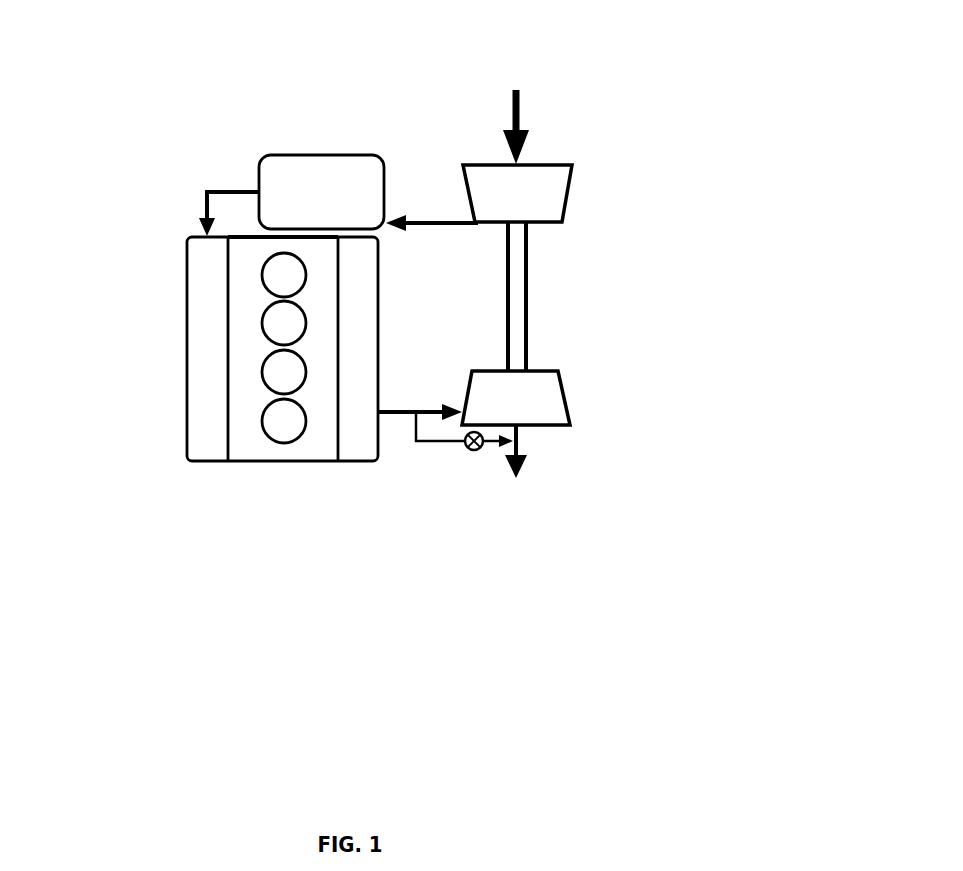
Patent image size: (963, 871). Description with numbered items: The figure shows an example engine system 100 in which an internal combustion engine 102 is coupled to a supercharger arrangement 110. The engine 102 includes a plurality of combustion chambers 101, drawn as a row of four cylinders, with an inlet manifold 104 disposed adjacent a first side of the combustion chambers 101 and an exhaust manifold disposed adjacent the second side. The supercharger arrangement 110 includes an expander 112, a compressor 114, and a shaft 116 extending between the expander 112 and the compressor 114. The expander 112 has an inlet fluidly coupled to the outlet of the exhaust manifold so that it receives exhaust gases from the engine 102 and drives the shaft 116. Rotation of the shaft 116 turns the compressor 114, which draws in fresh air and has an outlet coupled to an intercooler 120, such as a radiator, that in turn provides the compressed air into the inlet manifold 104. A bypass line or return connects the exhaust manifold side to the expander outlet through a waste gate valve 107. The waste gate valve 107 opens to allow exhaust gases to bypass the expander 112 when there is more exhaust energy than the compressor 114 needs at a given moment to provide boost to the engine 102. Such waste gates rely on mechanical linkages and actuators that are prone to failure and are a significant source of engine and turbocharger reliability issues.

The engine system 100 is at (152, 58).
The combustion chambers 101 is at (238, 405).
The engine 102 is at (256, 467).
The inlet manifold 104 is at (180, 314).
The waste gate valve 107 is at (466, 457).
The supercharger arrangement 110 is at (563, 237).
The expander 112 is at (516, 398).
The compressor 114 is at (450, 157).
The shaft 116 is at (507, 274).
The intercooler 120 is at (321, 192).